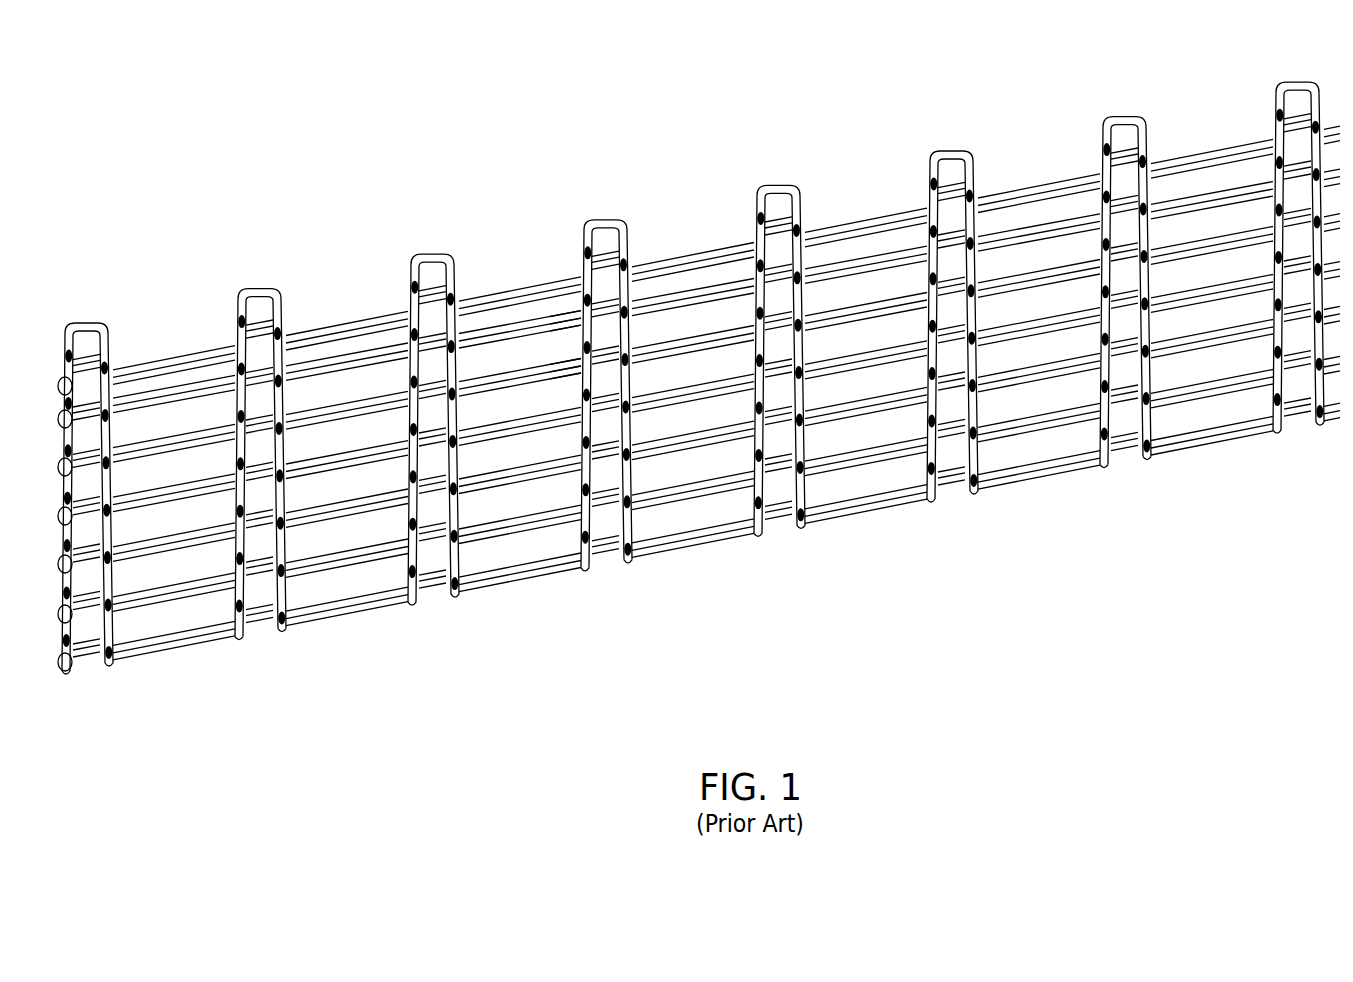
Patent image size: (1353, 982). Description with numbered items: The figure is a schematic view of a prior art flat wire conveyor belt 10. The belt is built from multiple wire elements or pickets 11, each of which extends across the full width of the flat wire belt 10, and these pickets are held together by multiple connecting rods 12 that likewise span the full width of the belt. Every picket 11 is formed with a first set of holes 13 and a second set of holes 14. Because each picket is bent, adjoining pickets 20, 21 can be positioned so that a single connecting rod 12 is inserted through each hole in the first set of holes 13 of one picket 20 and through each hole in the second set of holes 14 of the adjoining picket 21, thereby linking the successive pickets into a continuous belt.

The flat wire conveyor belt 10 is at (178, 246).
The picket 11 is at (425, 243).
The connecting rod 12 is at (378, 305).
The first set of holes 13 is at (578, 223).
The second set of holes 14 is at (568, 268).
The picket 20 is at (578, 345).
The adjoining picket 21 is at (578, 395).